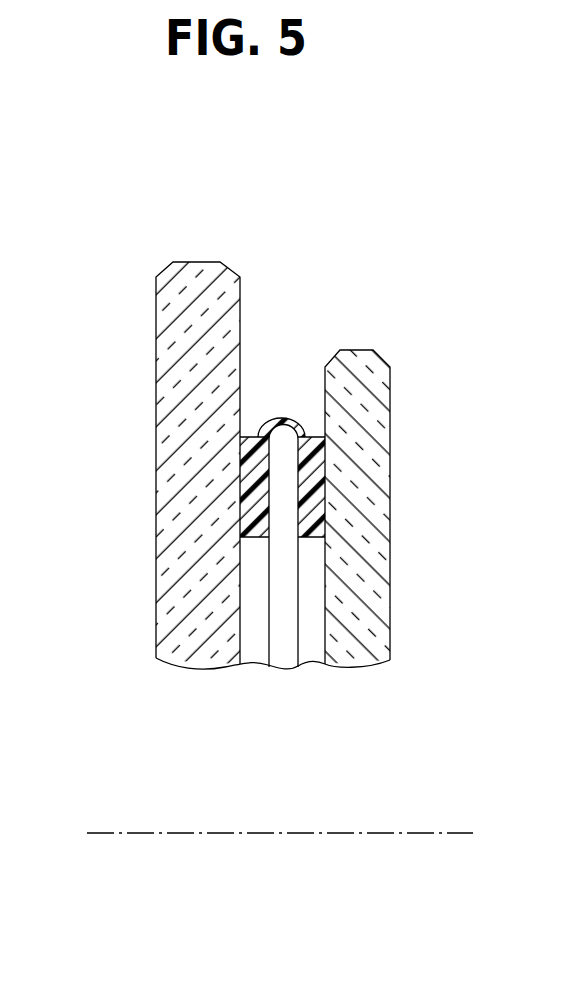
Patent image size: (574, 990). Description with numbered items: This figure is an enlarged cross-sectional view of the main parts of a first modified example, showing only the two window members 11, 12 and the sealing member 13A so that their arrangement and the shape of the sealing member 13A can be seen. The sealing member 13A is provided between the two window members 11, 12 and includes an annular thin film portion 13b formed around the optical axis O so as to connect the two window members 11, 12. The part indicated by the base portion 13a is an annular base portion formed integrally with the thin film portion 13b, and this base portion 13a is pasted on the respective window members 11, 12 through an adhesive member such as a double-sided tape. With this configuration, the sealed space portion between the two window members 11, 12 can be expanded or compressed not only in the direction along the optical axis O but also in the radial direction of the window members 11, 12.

The window member 11 is at (194, 265).
The window member 12 is at (358, 378).
The sealing member 13A is at (281, 410).
The annular base portion 13a is at (254, 455).
The annular thin film portion 13b is at (284, 419).
The optical axis O is at (100, 833).